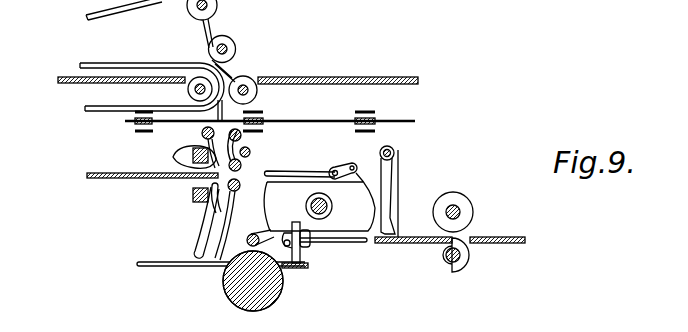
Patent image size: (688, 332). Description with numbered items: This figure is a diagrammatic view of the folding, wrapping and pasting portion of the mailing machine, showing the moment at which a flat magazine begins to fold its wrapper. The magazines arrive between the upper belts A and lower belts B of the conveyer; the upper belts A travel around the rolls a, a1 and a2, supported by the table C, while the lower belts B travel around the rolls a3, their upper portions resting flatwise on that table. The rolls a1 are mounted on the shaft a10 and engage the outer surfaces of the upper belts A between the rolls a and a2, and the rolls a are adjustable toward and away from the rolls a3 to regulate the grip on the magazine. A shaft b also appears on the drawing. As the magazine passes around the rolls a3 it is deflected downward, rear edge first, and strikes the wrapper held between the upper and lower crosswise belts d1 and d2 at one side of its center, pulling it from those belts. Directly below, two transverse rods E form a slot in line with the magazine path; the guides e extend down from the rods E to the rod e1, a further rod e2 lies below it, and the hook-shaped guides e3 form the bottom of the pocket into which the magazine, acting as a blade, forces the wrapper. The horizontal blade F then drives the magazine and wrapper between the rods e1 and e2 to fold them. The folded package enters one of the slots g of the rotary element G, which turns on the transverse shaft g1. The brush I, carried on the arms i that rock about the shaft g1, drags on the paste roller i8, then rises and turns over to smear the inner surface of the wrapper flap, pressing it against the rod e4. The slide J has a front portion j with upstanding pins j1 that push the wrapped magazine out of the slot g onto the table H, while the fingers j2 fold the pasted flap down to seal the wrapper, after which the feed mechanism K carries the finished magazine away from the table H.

The upper belts A is at (148, 61).
The lower belts B is at (60, 78).
The table C is at (351, 77).
The rolls a is at (249, 78).
The rolls a1 is at (229, 39).
The rolls a2 is at (190, 12).
The rolls a3 is at (195, 89).
The shaft a10 is at (236, 47).
The shaft b is at (215, 323).
The upper belts d1 is at (355, 112).
The lower belts d2 is at (355, 131).
The transverse rods E is at (232, 130).
The guides e is at (189, 154).
The rod e1 is at (241, 165).
The rod e2 is at (236, 191).
The hook-shaped guides e3 is at (207, 214).
The rod e4 is at (250, 150).
The horizontal blade F is at (103, 145).
The rotary element G is at (366, 203).
The slots g is at (262, 173).
The shaft g1 is at (329, 200).
The table H is at (407, 237).
The brush I is at (247, 239).
The arms i is at (262, 218).
The paste roller i8 is at (278, 303).
The slide J is at (203, 265).
The front portion j is at (297, 268).
The upstanding pins j1 is at (311, 202).
The fingers j2 is at (393, 165).
The feed mechanism K is at (470, 265).